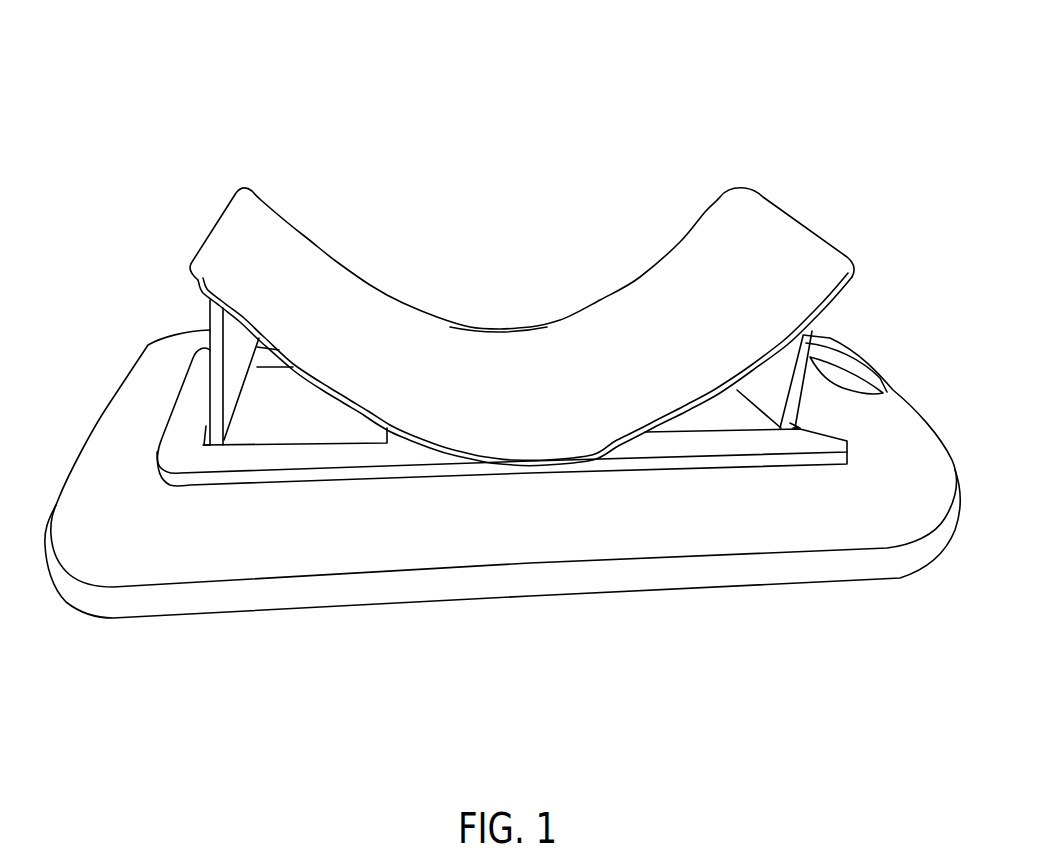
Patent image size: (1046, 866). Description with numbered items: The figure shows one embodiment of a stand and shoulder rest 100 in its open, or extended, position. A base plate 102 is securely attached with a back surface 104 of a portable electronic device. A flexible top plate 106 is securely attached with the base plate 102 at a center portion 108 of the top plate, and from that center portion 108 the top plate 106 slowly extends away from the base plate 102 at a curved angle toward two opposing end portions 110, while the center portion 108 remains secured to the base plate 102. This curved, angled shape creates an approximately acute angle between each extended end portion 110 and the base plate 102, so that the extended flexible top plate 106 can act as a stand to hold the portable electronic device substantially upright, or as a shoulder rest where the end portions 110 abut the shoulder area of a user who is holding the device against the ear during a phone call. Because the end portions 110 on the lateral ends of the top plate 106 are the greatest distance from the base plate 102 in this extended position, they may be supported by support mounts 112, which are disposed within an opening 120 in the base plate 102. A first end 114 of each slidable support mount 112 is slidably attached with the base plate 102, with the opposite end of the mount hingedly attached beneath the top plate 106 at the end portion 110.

The stand and shoulder rest 100 is at (600, 88).
The base plate 102 is at (177, 443).
The back surface 104 is at (747, 527).
The flexible top plate 106 is at (355, 350).
The center portion 108 is at (497, 360).
The end portions 110 is at (233, 207).
The support mount 112 is at (229, 360).
The first end 114 is at (223, 441).
The opening 120 is at (320, 423).